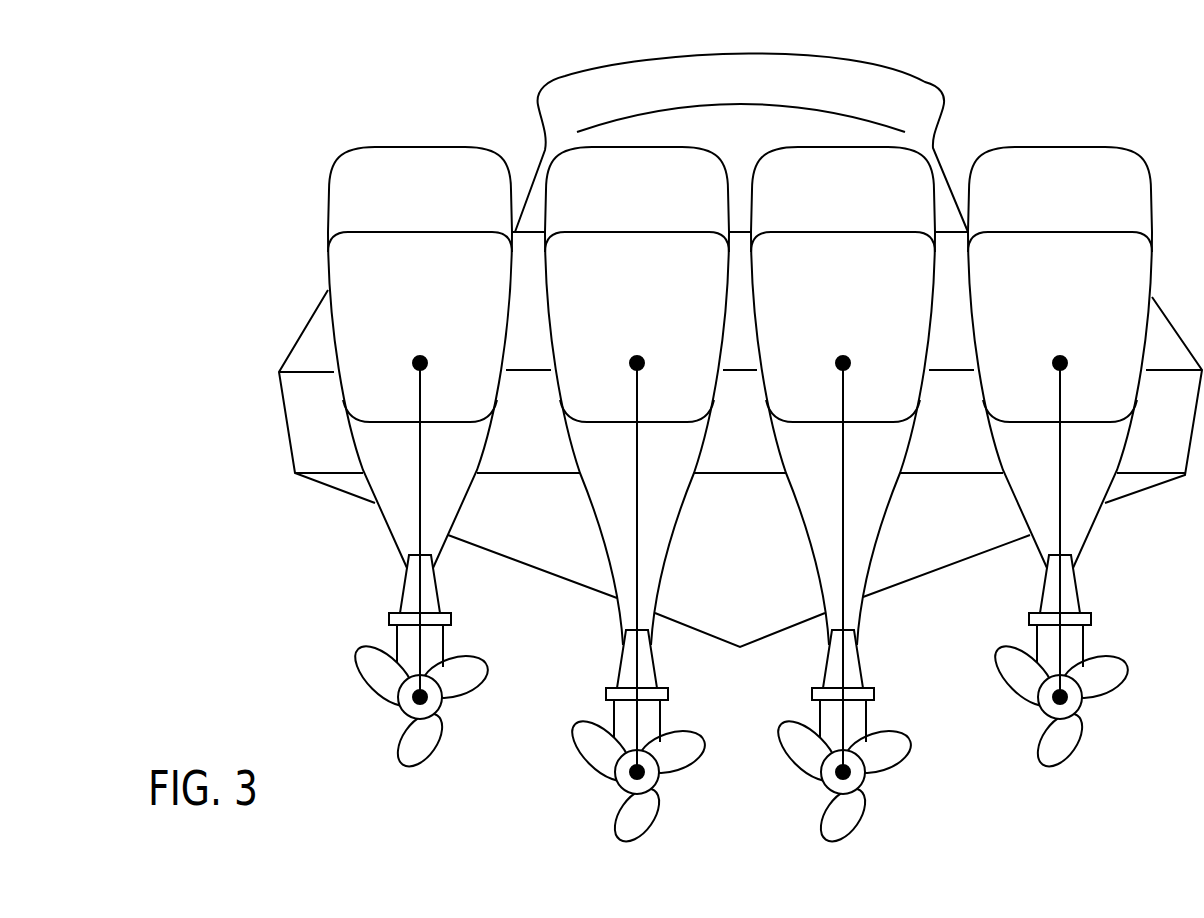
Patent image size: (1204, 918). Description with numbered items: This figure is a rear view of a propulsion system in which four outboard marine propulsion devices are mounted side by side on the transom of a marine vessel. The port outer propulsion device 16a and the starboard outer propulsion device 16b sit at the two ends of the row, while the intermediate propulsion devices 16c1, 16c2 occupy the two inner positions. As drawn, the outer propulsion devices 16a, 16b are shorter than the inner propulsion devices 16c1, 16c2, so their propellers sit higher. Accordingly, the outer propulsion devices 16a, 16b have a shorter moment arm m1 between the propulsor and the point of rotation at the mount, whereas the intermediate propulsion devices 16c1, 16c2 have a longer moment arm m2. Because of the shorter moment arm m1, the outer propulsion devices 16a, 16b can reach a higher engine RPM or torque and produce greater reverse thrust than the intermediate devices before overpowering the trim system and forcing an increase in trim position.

The port outer propulsion device 16a is at (412, 180).
The intermediate propulsion device 16c1 is at (632, 165).
The intermediate propulsion device 16c2 is at (848, 165).
The starboard outer propulsion device 16b is at (1068, 180).
The moment arm m1 is at (1130, 527).
The moment arm m2 is at (918, 515).